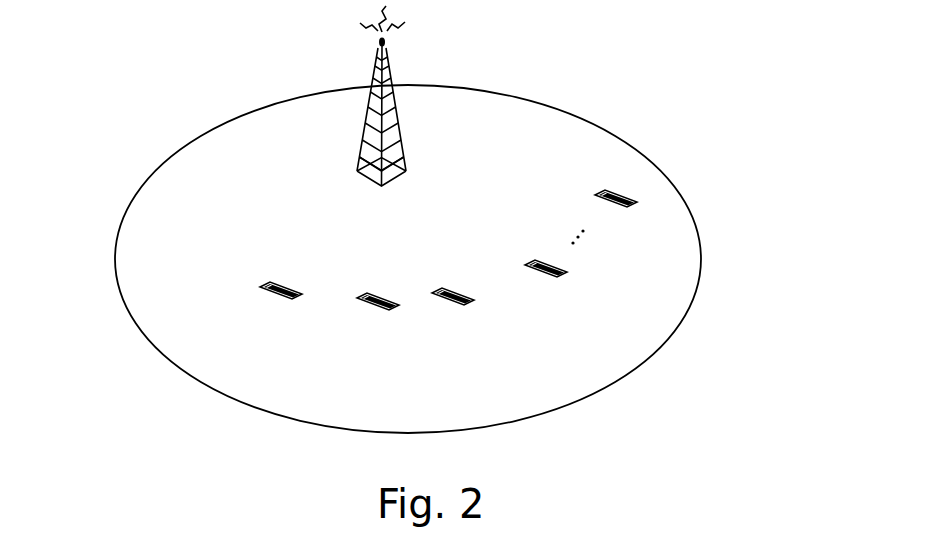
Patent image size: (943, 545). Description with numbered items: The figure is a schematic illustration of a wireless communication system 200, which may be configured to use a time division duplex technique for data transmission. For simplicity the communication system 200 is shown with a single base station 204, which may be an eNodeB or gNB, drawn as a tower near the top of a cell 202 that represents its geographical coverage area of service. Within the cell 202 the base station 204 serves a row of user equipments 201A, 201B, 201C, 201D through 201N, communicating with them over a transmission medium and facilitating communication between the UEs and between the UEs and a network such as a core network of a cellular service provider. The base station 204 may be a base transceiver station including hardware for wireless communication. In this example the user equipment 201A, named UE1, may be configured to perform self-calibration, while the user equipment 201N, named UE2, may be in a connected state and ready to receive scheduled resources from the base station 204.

The wireless communication system 200 is at (745, 58).
The cell 202 is at (102, 281).
The base station 204 is at (372, 177).
The user equipment UE1 201A is at (291, 302).
The user equipment 201B is at (389, 314).
The user equipment 201C is at (464, 309).
The user equipment 201D is at (557, 282).
The user equipment UE2 201N is at (627, 212).